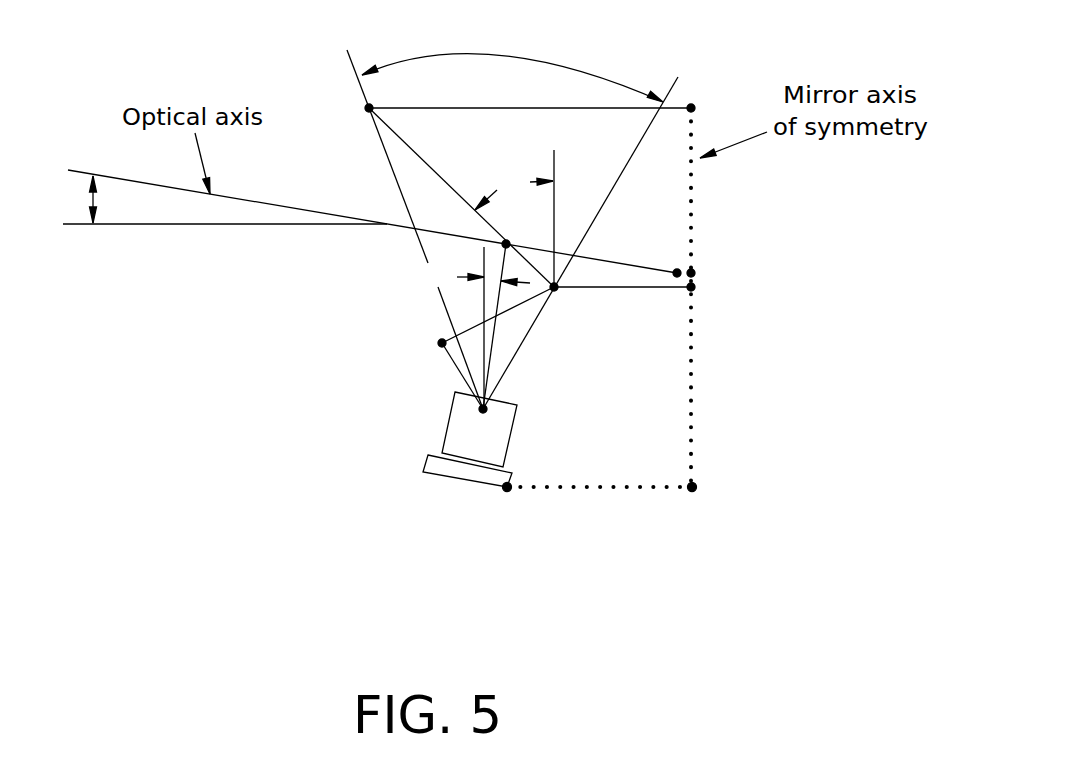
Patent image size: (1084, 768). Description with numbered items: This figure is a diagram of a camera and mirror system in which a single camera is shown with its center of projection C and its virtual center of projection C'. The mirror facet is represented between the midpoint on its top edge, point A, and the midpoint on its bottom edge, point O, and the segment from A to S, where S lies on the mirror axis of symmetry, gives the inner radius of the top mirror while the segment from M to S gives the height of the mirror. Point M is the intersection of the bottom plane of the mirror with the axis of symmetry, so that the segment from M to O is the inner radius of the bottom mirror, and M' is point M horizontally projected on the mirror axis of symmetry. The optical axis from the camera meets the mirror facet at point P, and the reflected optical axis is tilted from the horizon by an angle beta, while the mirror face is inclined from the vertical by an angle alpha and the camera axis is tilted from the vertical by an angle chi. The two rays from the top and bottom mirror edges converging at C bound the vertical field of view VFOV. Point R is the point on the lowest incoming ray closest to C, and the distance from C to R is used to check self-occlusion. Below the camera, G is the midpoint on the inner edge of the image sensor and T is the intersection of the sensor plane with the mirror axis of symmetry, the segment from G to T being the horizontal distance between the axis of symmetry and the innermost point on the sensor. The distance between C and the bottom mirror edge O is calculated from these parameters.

The midpoint on top edge of mirror facet A is at (358, 112).
The top point on mirror axis of symmetry S is at (701, 96).
The intersection of optical axis and mirror facet P is at (512, 231).
The midpoint on bottom edge of mirror facet O is at (563, 302).
The virtual center of projection of camera C' is at (677, 260).
The M horizontally projected on mirror axis of symmetry M' is at (706, 260).
The intersection of bottom plane of mirror and axis of symmetry M is at (703, 304).
The point on lowest incoming ray closest to C R is at (426, 354).
The center of projection of camera C is at (480, 425).
The midpoint on edge of image sensor inner side G is at (515, 507).
The intersection of sensor plane and mirror axis of symmetry T is at (698, 507).
The vertical field of view VFOV is at (512, 60).